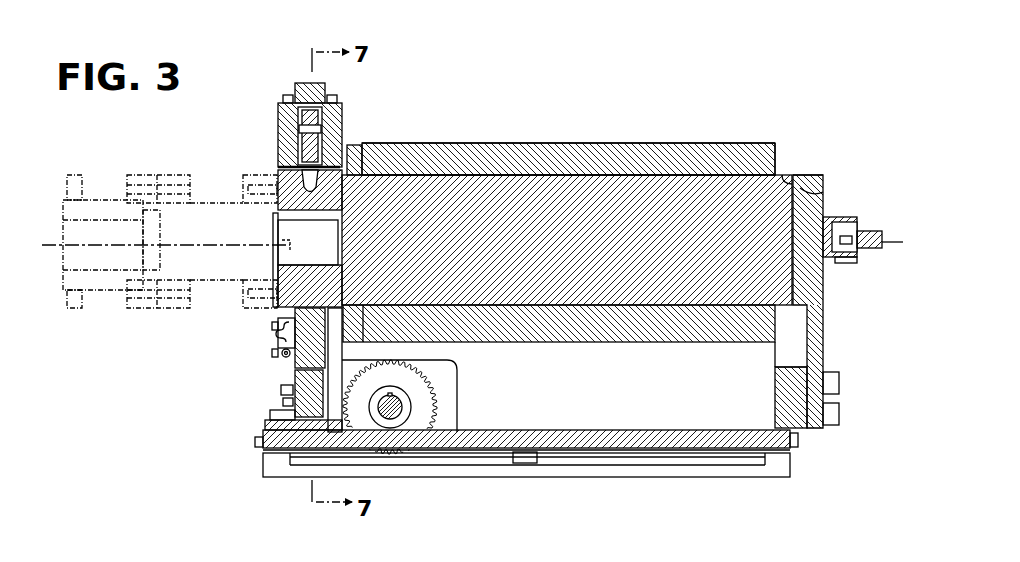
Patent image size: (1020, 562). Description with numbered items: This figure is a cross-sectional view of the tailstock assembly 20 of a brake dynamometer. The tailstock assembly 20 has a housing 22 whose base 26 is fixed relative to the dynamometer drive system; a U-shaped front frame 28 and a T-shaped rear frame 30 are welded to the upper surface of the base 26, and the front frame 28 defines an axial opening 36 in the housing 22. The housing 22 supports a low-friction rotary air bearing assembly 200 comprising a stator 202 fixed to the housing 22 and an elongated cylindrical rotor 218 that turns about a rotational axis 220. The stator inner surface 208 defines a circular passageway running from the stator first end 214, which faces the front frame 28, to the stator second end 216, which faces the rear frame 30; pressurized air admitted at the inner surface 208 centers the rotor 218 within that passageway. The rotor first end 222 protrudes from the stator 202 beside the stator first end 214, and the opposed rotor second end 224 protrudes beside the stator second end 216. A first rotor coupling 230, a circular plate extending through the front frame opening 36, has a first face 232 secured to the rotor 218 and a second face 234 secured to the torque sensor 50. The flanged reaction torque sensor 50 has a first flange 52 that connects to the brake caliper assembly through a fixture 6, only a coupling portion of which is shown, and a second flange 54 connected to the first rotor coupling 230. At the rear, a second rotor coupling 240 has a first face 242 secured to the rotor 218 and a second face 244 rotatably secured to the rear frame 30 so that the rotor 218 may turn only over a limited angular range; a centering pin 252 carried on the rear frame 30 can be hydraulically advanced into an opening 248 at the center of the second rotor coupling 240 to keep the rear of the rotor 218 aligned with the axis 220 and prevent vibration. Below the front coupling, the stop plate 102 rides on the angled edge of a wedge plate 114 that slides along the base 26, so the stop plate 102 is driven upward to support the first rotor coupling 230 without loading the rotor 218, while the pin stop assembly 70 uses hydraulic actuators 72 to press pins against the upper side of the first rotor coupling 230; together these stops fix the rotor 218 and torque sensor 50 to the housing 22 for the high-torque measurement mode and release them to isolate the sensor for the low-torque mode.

The fixture 6 is at (107, 213).
The tailstock assembly 20 is at (718, 47).
The housing 22 is at (832, 346).
The base 26 is at (668, 443).
The U-shaped front frame 28 is at (278, 136).
The T-shaped rear frame 30 is at (813, 178).
The axial opening 36 is at (278, 172).
The torque sensor 50 is at (205, 218).
The first flange 52 is at (170, 207).
The second flange 54 is at (280, 300).
The pin stop assembly 70 is at (284, 80).
The hydraulic actuator 72 is at (873, 233).
The stop plate 102 is at (293, 383).
The wedge plate 114 is at (283, 400).
The bearing assembly 200 is at (560, 138).
The stator 202 is at (678, 157).
The stator inner surface 208 is at (481, 178).
The stator first end 214 is at (348, 147).
The stator second end 216 is at (778, 148).
The rotor 218 is at (610, 212).
The rotational axis 220 is at (890, 240).
The rotor first end 222 is at (293, 362).
The rotor second end 224 is at (823, 190).
The first rotor coupling 230 is at (283, 310).
The first face 232 is at (290, 297).
The second face 234 is at (272, 267).
The second rotor coupling 240 is at (808, 176).
The first face 242 is at (795, 174).
The second face 244 is at (826, 212).
The opening 248 is at (805, 243).
The centering pin 252 is at (846, 248).